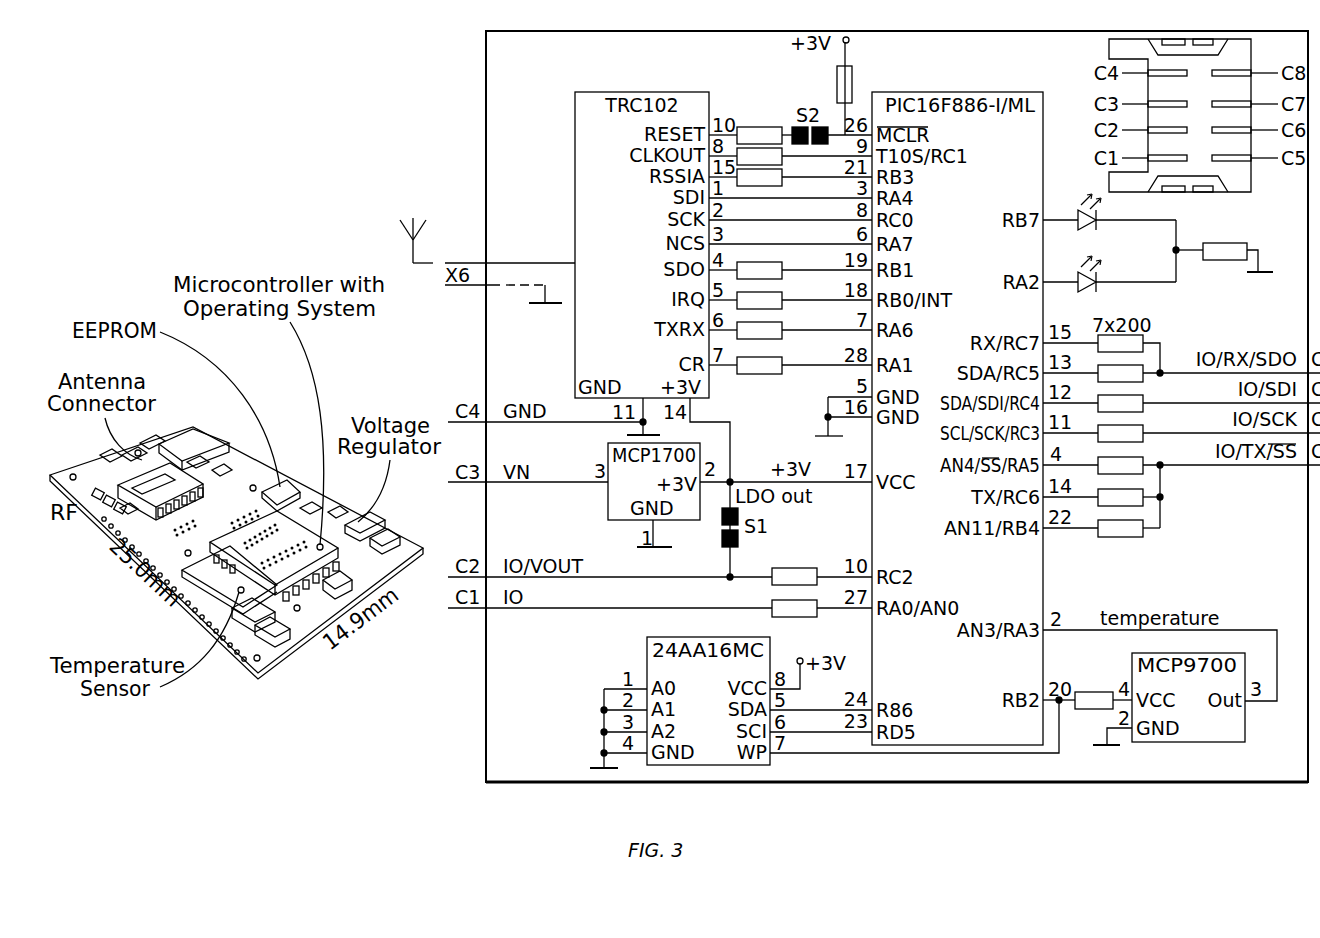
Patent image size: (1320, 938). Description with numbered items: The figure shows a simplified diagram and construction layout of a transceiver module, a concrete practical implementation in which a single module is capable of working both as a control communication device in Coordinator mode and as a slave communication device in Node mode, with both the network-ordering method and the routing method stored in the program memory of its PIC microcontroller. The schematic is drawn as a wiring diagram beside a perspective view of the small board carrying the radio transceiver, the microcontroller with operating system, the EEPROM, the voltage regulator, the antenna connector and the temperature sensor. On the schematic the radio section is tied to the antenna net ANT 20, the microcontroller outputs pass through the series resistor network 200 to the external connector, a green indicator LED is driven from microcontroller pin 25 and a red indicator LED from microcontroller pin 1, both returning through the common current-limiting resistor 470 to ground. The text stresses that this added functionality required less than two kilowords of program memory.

The antenna connection ANT 20 is at (487, 240).
The 2x200 ohm resistor 200 is at (660, 565).
The green LED1 on pin 25 is at (1109, 218).
The red LED2 on pin 1 is at (1109, 280).
The 470 ohm resistor 470 is at (1224, 246).